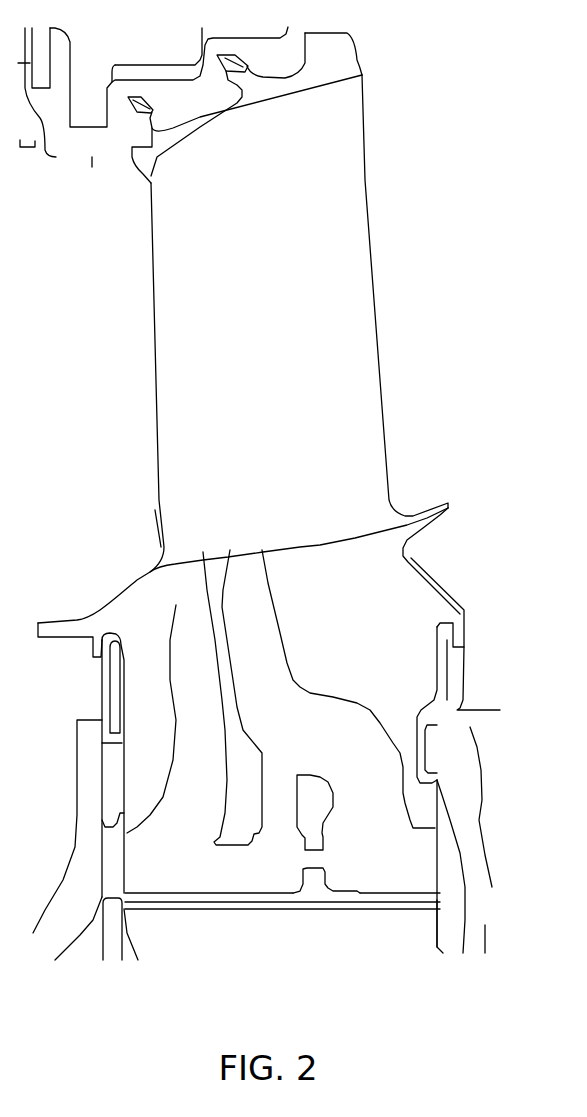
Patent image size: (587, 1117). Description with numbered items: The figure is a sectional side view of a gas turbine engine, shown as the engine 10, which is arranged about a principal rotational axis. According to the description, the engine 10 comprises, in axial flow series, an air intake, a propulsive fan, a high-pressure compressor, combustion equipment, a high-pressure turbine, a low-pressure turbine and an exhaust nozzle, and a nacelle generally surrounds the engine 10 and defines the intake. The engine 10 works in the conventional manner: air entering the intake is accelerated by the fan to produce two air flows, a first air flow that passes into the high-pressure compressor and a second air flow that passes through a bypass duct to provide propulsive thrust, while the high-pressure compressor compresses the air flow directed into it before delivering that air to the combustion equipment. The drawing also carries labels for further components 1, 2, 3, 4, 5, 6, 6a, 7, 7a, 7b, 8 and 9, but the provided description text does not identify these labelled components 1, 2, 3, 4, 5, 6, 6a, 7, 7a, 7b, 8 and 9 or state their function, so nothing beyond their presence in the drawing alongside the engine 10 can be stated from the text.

The turbine blade 1 is at (348, 260).
The blade tip shroud hook 2 is at (412, 628).
The rotor disc 3 is at (417, 935).
The upstream seal plate 4 is at (143, 863).
The downstream seal plate 5 is at (413, 880).
The sealing strip 6 is at (185, 678).
The sealing strip lug 6a is at (170, 817).
The blade root 7 is at (262, 637).
The root sealing element 7a is at (277, 810).
The root sealing hook 7b is at (393, 810).
The locking element 8 is at (312, 860).
The retaining ring 9 is at (200, 908).
The engine 10 is at (343, 908).